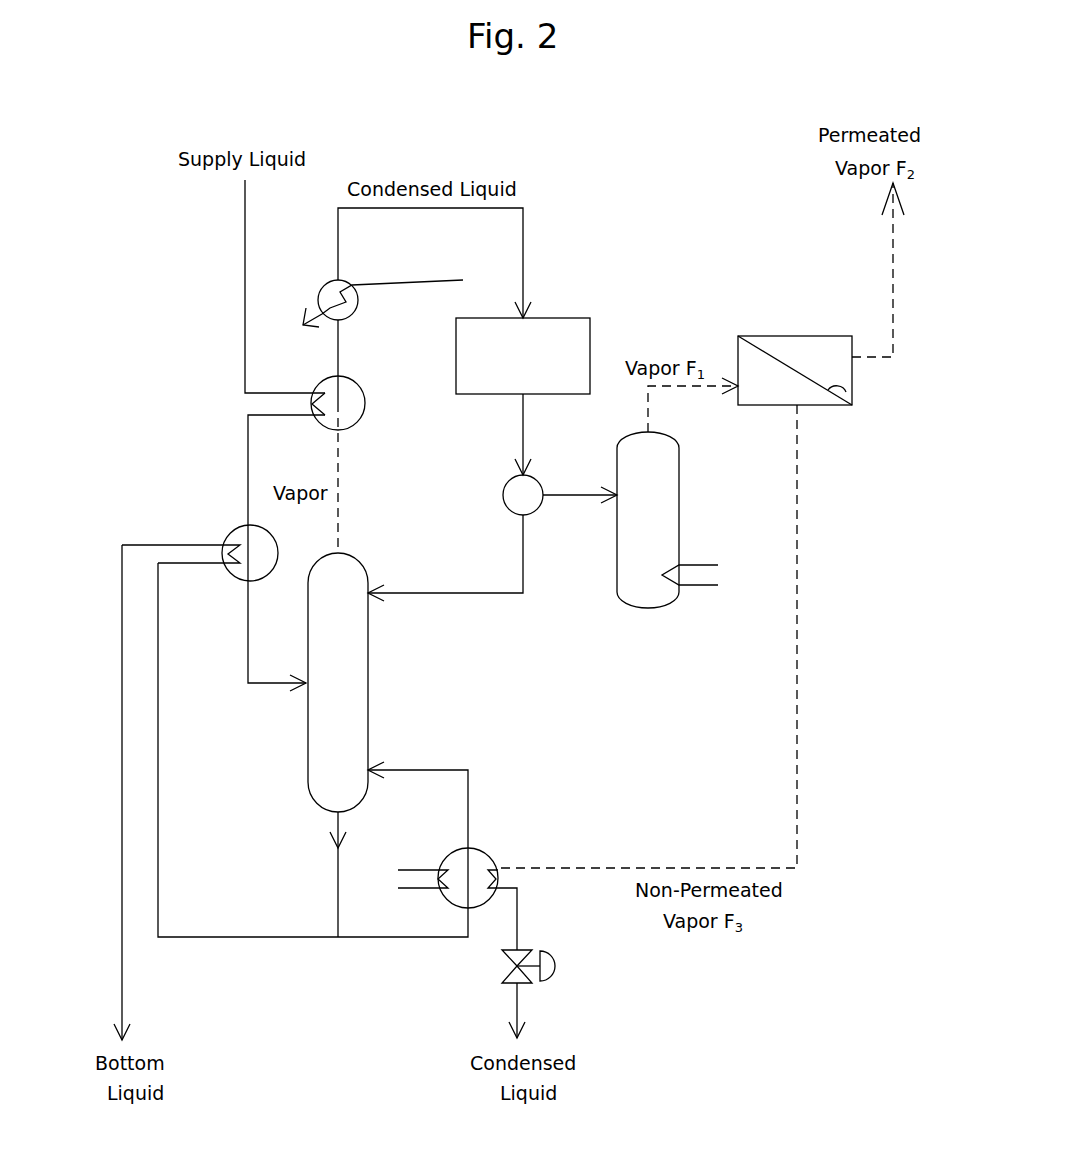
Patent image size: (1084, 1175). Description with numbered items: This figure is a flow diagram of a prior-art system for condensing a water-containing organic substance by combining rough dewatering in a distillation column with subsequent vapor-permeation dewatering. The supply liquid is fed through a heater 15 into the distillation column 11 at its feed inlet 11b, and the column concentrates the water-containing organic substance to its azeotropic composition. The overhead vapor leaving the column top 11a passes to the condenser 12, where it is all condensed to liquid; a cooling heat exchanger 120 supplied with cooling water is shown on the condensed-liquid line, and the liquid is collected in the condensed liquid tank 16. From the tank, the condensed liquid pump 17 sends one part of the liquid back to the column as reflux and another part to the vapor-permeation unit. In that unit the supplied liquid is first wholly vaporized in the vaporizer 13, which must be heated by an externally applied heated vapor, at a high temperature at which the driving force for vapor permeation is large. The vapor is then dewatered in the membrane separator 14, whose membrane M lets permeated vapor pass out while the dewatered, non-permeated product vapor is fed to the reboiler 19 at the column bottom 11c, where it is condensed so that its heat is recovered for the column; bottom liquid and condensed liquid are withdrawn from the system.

The distillation column 11 is at (308, 734).
The top of distillation column 11a is at (368, 556).
The supply liquid inlet of distillation column 11b is at (303, 675).
The bottom of distillation column 11c is at (303, 803).
The condenser 12 is at (366, 405).
The vaporizer 13 is at (680, 465).
The membrane separator 14 is at (738, 345).
The heater (heat exchanger) 15 is at (236, 530).
The condensed liquid tank 16 is at (545, 318).
The condensed liquid pump 17 is at (538, 478).
The reboiler 19 is at (482, 851).
The cooling heat exchanger 120 is at (397, 290).
The membrane M is at (846, 392).